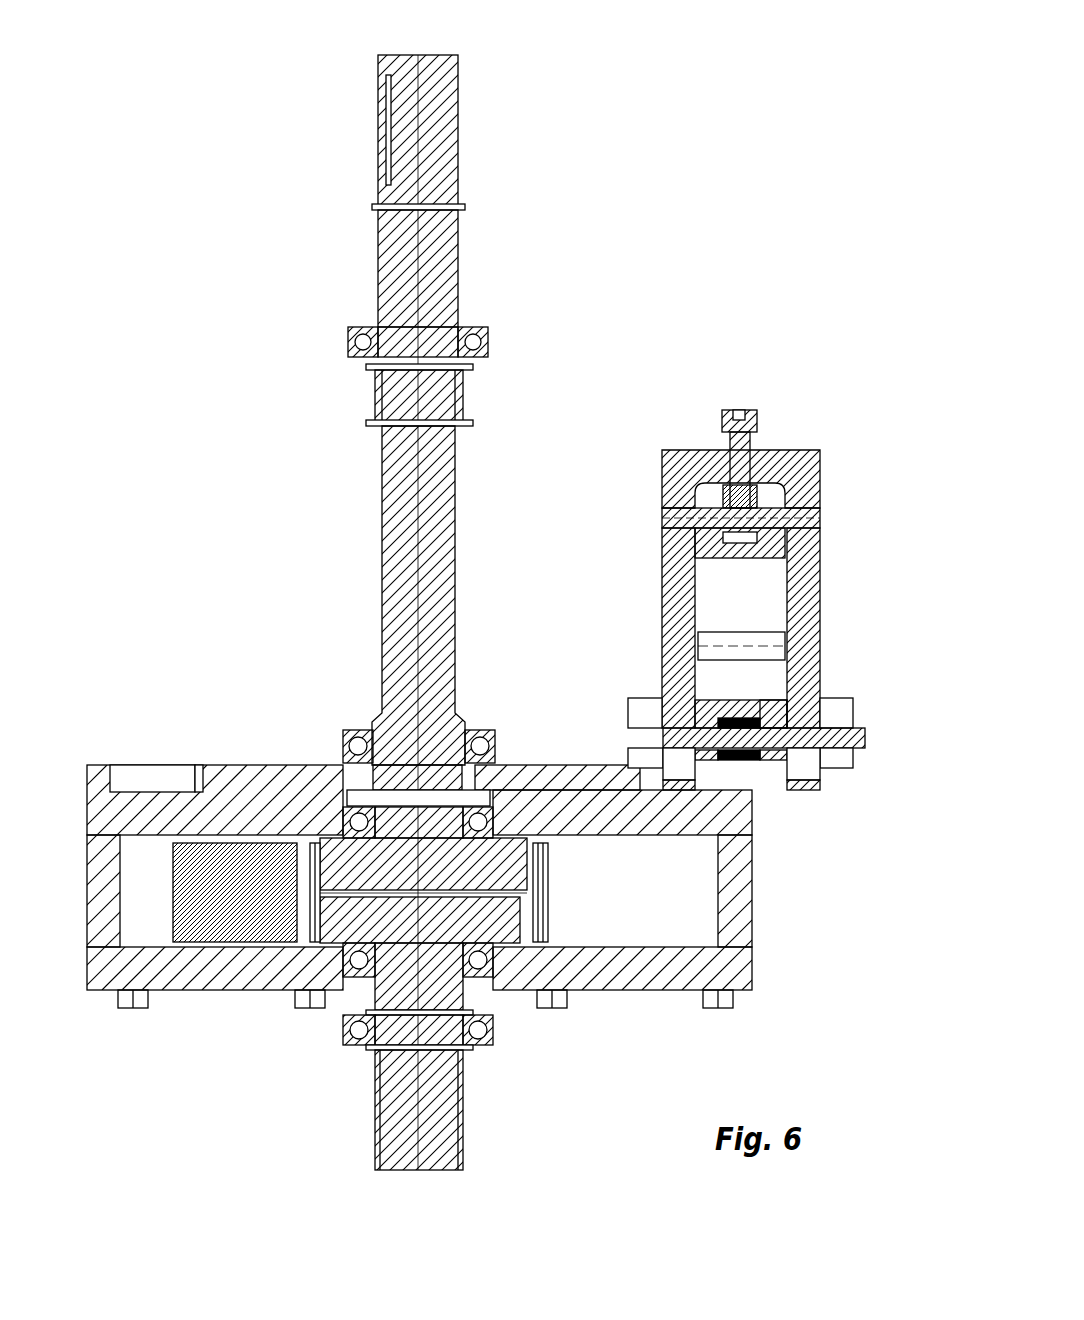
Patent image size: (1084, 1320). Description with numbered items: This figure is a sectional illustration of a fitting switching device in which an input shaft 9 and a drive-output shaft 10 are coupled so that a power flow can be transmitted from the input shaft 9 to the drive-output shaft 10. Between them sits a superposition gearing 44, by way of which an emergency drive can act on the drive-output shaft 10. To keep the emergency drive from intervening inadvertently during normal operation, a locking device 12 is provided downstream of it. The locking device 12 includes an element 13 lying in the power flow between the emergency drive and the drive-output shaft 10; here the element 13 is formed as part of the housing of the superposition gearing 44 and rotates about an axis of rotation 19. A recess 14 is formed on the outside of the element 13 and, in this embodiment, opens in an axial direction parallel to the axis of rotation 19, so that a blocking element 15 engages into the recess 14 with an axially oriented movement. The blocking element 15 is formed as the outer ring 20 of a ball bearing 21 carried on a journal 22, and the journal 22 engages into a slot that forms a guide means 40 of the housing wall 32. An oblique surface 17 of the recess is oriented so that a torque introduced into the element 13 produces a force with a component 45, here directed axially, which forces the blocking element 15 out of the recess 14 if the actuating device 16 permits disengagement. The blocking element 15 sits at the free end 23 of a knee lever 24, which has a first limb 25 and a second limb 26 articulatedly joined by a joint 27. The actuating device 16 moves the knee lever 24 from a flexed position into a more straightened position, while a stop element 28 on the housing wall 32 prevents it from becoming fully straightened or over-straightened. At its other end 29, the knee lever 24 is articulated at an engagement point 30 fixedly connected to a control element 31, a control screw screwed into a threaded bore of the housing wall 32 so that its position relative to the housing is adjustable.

The input shaft 9 is at (445, 95).
The drive-output shaft 10 is at (448, 1125).
The locking device 12 is at (687, 228).
The element 13 is at (190, 975).
The recess 14 is at (728, 765).
The blocking element 15 is at (800, 705).
The actuating device 16 is at (737, 598).
The oblique surface 17 is at (738, 778).
The axis of rotation 19 is at (420, 490).
The outer ring 20 is at (725, 725).
The ball bearing 21 is at (775, 705).
The journal 22 is at (835, 748).
The free end 23 is at (655, 760).
The knee lever 24 is at (795, 605).
The first limb 25 is at (705, 670).
The second limb 26 is at (705, 580).
The joint 27 is at (733, 620).
The stop element 28 is at (702, 635).
The end 29 is at (803, 488).
The engagement point 30 is at (752, 500).
The control element 31 is at (735, 440).
The housing wall 32 is at (668, 542).
The guide means 40 is at (673, 755).
The superposition gearing 44 is at (785, 897).
The component 45 is at (750, 778).